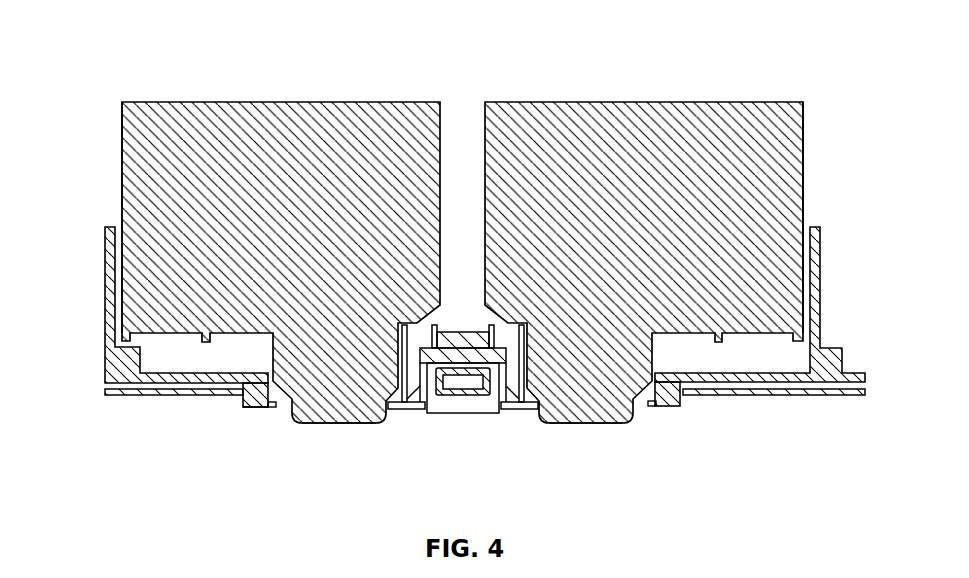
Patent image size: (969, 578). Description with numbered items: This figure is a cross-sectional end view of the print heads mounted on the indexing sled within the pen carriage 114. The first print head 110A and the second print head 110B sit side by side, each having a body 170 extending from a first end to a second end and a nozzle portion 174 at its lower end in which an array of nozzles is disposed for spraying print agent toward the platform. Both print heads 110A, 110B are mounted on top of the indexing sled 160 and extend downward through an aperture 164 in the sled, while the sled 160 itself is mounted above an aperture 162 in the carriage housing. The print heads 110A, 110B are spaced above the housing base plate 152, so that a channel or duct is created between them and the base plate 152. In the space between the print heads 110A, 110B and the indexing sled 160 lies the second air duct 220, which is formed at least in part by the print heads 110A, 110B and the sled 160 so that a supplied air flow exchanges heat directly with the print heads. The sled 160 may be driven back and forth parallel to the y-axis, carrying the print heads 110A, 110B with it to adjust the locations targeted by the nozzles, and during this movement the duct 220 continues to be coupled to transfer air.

The pen carriage 114 is at (130, 42).
The first print head 110A is at (205, 112).
The second print head 110B is at (668, 113).
The body 170 is at (135, 180).
The indexing sled 160 is at (115, 360).
The base plate 152 is at (165, 395).
The second air duct 220 is at (230, 362).
The aperture 162 is at (243, 407).
The aperture 164 is at (276, 407).
The nozzle portion 174 is at (352, 424).